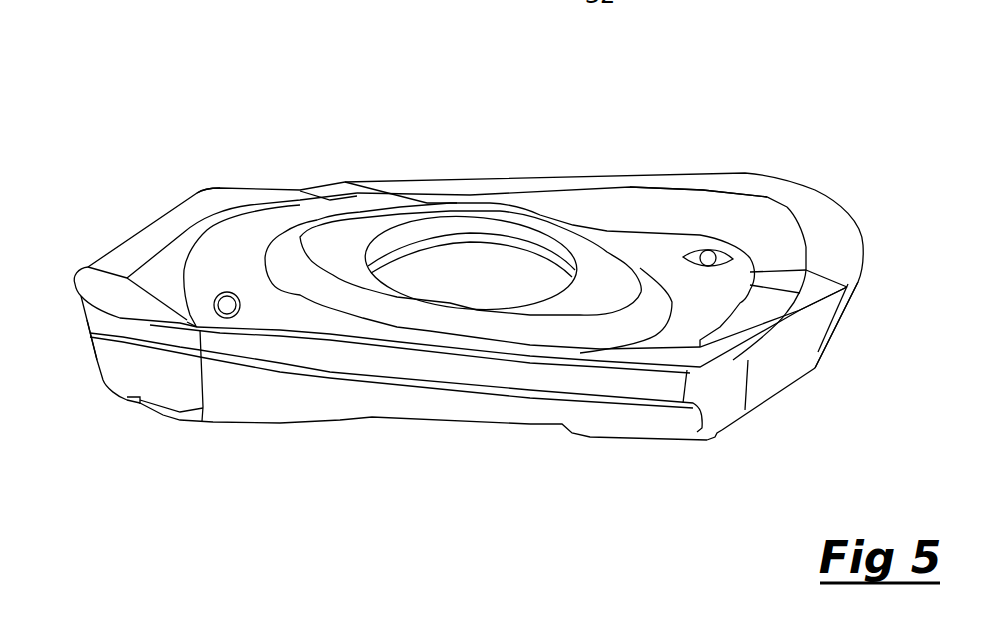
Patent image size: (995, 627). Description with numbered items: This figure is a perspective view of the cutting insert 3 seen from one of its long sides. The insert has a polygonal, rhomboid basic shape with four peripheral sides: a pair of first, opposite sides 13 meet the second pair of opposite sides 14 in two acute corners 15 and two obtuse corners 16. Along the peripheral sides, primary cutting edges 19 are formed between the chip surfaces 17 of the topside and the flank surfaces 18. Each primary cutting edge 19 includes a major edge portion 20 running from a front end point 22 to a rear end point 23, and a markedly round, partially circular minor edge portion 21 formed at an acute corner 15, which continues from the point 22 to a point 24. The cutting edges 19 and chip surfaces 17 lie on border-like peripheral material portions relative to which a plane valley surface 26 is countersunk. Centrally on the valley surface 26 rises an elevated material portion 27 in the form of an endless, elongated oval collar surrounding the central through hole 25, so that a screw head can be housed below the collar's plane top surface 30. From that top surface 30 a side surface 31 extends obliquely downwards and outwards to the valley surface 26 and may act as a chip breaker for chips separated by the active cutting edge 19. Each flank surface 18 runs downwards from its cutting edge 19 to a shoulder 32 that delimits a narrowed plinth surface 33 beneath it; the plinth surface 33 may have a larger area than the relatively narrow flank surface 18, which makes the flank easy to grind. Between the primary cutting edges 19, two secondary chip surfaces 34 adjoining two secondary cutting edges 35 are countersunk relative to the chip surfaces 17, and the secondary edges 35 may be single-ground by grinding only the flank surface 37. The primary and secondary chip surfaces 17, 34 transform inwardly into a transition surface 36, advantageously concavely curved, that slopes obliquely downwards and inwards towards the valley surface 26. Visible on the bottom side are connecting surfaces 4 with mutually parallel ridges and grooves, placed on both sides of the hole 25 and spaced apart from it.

The cutting insert 3 is at (251, 99).
The connecting surface 4 is at (648, 442).
The first peripheral side 13 is at (501, 171).
The second peripheral side 14 is at (150, 206).
The acute corner 15 is at (68, 279).
The obtuse corner 16 is at (197, 176).
The chip surface 17 is at (464, 283).
The flank surface 18 is at (298, 355).
The primary cutting edge 19 is at (186, 327).
The major edge portion 20 is at (562, 178).
The minor edge portion 21 is at (123, 320).
The front end point 22 is at (200, 328).
The rear end point 23 is at (586, 358).
The end point of minor edge portion 24 is at (99, 261).
The central through hole 25 is at (457, 253).
The valley surface 26 is at (473, 284).
The elevated material portion (collar) 27 is at (610, 228).
The plane top surface of the collar 30 is at (367, 227).
The side surface of the collar 31 is at (605, 327).
The shoulder 32 is at (483, 392).
The plinth surface 33 is at (335, 406).
The secondary chip surface 34 is at (847, 287).
The secondary cutting edge 35 is at (797, 330).
The transition surface 36 is at (685, 210).
The flank surface of secondary cutting edge 37 is at (737, 380).